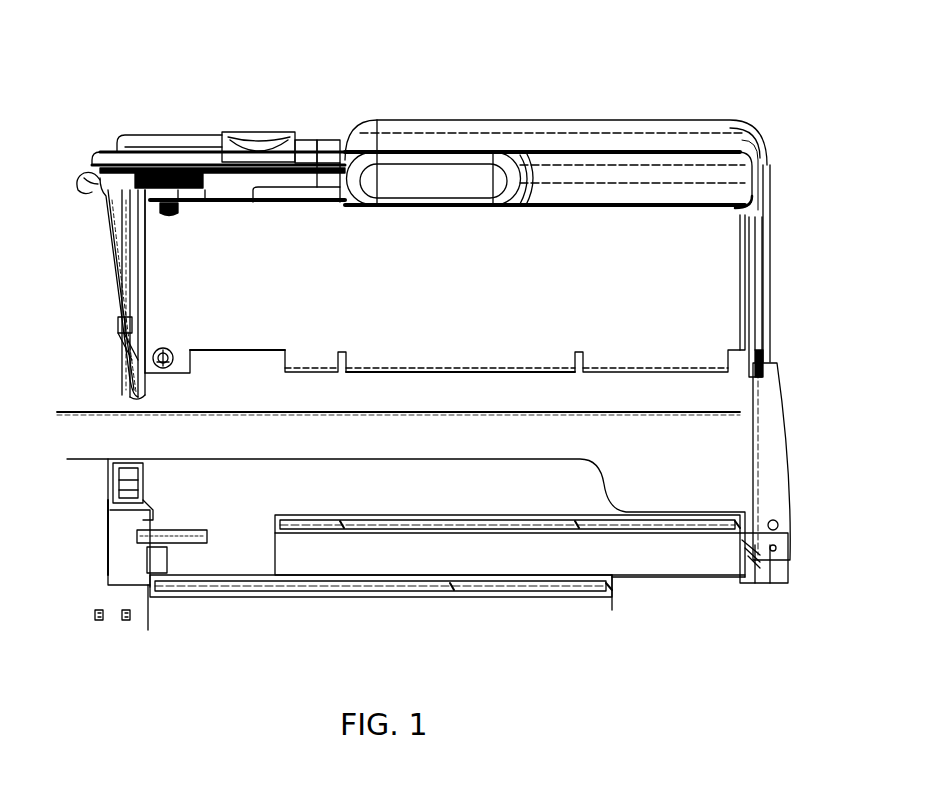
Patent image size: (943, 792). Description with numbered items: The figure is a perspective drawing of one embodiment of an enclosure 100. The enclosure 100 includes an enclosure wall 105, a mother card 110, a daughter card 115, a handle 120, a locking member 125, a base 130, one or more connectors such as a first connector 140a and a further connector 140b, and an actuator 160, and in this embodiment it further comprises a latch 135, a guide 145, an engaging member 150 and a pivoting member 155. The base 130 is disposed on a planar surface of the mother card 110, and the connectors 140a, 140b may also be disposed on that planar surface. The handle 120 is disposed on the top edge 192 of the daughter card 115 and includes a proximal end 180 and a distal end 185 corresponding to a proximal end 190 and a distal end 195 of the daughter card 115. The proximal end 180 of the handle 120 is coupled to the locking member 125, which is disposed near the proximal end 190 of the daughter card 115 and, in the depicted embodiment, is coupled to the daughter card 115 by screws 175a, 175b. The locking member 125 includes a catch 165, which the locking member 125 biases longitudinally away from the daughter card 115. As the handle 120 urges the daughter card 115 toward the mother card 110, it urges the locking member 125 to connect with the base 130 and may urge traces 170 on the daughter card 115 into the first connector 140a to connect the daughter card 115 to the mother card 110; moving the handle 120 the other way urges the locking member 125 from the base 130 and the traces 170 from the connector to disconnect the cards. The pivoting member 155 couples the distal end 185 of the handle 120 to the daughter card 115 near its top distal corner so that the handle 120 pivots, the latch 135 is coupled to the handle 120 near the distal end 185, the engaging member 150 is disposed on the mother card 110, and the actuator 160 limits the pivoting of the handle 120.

The enclosure 100 is at (120, 52).
The enclosure wall 105 is at (112, 411).
The mother card 110 is at (176, 459).
The daughter card 115 is at (212, 352).
The handle 120 is at (392, 118).
The locking member 125 is at (116, 272).
The base 130 is at (148, 508).
The latch 135 is at (775, 290).
The first connector 140a is at (292, 516).
The connector 140b is at (252, 576).
The guide 145 is at (790, 465).
The engaging member 150 is at (792, 572).
The pivoting member 155 is at (756, 200).
The actuator 160 is at (78, 182).
The catch 165 is at (116, 322).
The traces 170 is at (408, 368).
The screw 175a is at (166, 214).
The screw 175b is at (172, 350).
The proximal end of the handle 180 is at (126, 136).
The distal end of the handle 185 is at (762, 120).
The proximal end of the daughter card 190 is at (146, 288).
The top edge of the daughter card 192 is at (372, 207).
The distal end of the daughter card 195 is at (748, 318).